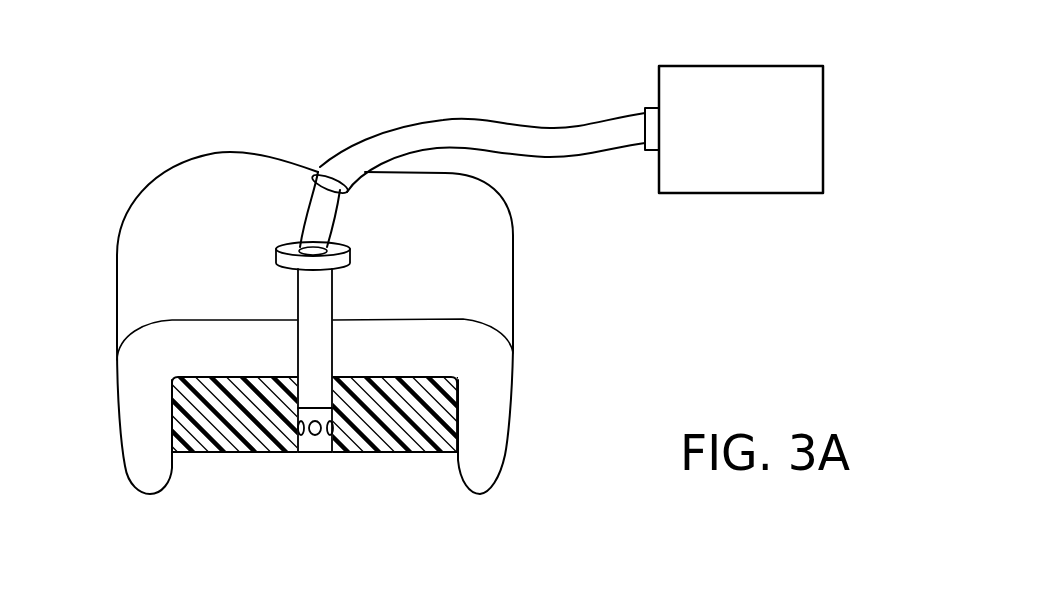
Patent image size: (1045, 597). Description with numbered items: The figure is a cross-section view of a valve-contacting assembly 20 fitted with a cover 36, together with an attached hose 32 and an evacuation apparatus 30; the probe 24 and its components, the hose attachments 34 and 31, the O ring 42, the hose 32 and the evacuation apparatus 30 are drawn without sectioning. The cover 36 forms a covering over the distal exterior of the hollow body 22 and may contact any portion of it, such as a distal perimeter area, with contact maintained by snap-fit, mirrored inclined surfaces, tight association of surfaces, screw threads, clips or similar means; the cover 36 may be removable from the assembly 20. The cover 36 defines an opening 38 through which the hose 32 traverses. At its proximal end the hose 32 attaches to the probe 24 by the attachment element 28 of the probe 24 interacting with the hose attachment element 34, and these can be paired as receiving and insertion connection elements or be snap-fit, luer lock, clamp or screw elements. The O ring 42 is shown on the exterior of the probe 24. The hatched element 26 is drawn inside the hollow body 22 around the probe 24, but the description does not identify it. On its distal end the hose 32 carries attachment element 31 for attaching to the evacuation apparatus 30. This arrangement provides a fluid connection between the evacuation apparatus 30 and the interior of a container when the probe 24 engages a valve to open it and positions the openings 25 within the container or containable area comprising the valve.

The valve-contacting assembly 20 is at (562, 379).
The hollow body 22 is at (128, 418).
The probe 24 is at (315, 342).
The openings 25 is at (320, 437).
The adsorbent foam block 26 is at (437, 395).
The attachment element 28 is at (351, 255).
The evacuation apparatus 30 is at (752, 144).
The attachment element 31 is at (652, 112).
The hose 32 is at (570, 145).
The hose attachment element 34 is at (310, 250).
The cover 36 is at (188, 197).
The opening 38 is at (318, 173).
The O ring 42 is at (338, 423).